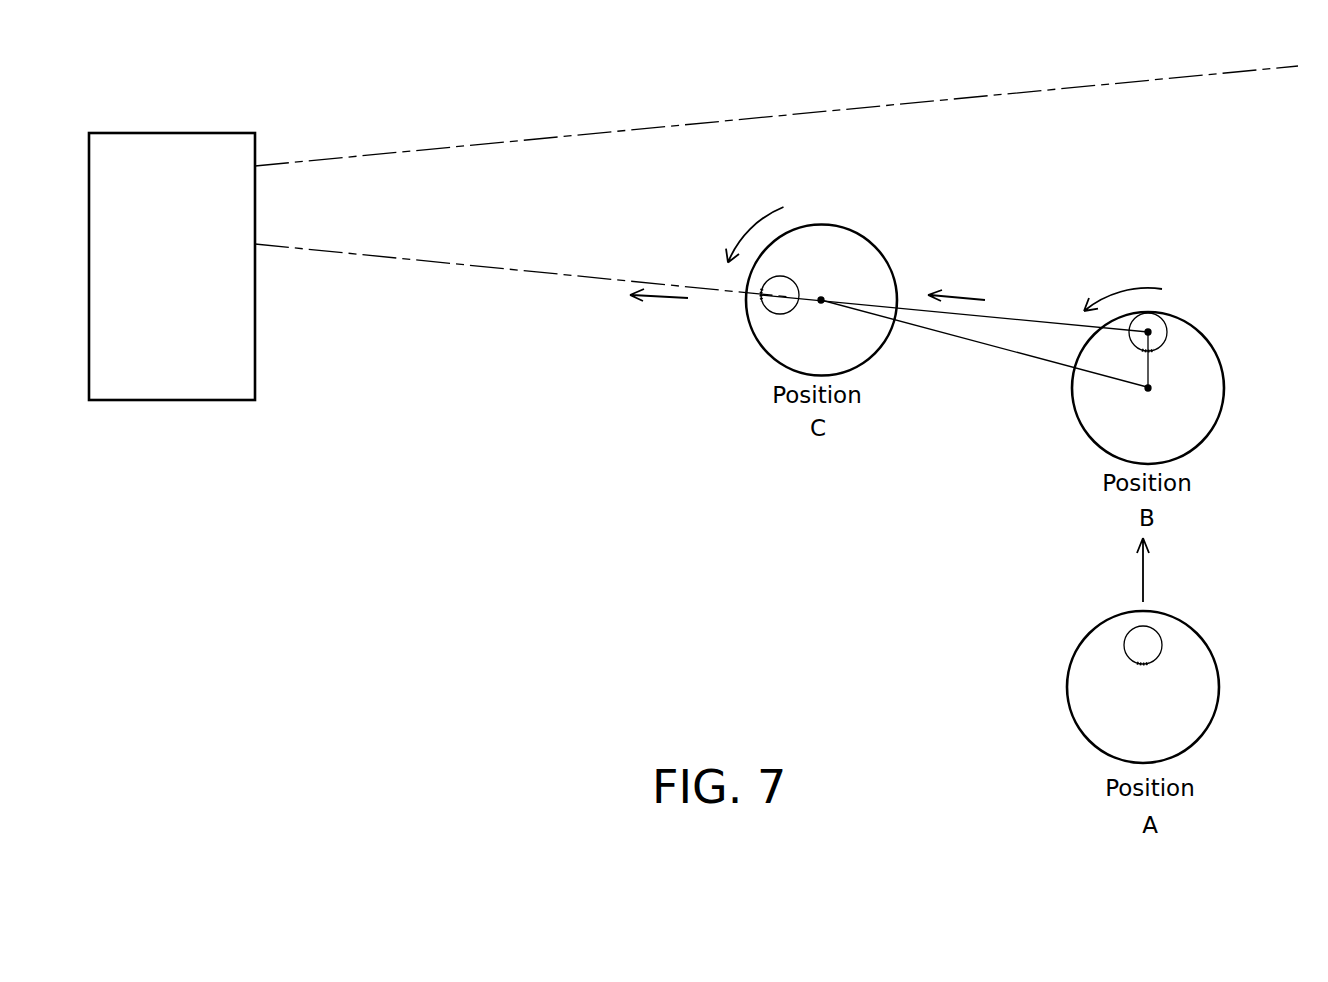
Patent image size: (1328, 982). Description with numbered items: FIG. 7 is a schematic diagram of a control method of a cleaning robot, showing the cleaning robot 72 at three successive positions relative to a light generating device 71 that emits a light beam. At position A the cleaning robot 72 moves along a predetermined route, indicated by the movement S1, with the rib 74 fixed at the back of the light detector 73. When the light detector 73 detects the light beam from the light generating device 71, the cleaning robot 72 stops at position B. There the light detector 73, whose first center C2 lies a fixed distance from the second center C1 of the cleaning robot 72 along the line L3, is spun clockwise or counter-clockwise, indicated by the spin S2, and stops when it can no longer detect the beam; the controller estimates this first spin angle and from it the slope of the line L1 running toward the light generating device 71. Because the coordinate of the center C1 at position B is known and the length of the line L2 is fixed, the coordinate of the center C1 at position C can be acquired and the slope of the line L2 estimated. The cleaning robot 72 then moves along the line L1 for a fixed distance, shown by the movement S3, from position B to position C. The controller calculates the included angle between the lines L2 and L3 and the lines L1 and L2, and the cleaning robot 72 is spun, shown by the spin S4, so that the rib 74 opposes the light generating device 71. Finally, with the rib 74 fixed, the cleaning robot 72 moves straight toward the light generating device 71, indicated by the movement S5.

The light generating device 71 is at (172, 133).
The cleaning robot 72 is at (867, 363).
The light detector 73 is at (783, 314).
The rib 74 is at (758, 297).
The center of the cleaning robot C1 is at (821, 299).
The center of the light detector C2 is at (1153, 313).
The line L1 is at (1043, 320).
The line L2 is at (988, 348).
The line L3 is at (1152, 370).
The movement to position B S1 is at (1141, 573).
The spin of the light detector S2 is at (1120, 290).
The movement from position B to position C S3 is at (960, 292).
The spin of the cleaning robot S4 is at (747, 232).
The movement toward the light generating device S5 is at (655, 303).